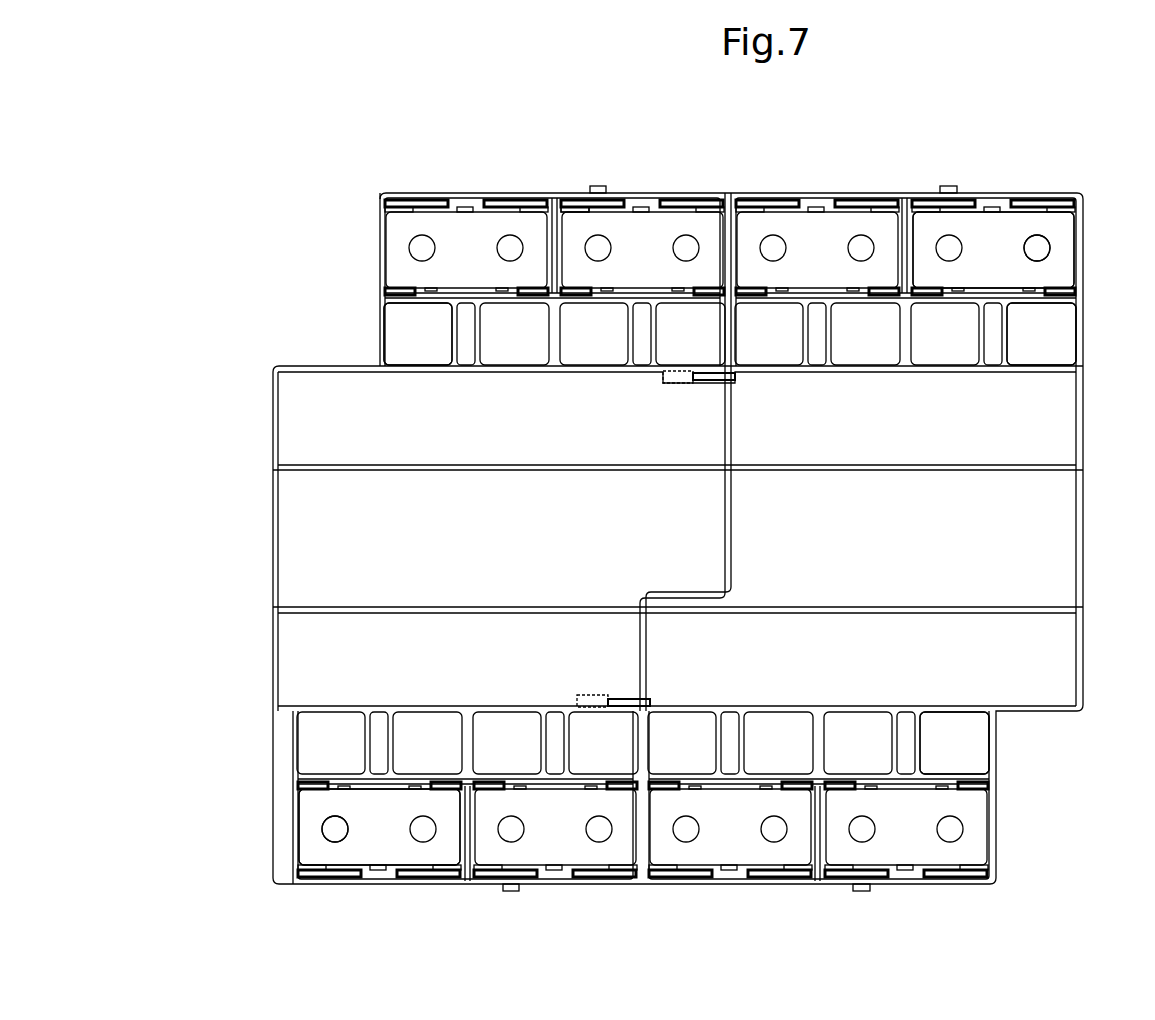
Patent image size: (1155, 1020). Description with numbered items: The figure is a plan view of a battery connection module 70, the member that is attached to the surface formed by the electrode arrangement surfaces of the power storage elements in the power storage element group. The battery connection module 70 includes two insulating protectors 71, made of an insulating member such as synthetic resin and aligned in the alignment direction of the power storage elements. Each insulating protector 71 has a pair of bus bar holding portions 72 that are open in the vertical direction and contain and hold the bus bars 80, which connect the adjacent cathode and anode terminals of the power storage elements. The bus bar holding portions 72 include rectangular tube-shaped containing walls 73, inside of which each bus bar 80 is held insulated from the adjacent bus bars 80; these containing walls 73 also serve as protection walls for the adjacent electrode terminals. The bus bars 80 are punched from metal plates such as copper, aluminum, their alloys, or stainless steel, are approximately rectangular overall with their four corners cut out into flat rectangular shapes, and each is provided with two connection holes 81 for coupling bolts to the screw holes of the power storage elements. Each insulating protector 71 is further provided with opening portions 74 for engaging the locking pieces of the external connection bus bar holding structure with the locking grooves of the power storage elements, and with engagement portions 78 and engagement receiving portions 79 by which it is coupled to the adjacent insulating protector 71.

The battery connection module 70 is at (716, 933).
The insulating protector 71 is at (273, 546).
The bus bar holding portion 72 is at (587, 213).
The containing wall 73 is at (552, 214).
The opening portion 74 is at (390, 322).
The engagement portion 78 is at (705, 380).
The engagement receiving portion 79 is at (683, 386).
The bus bar 80 is at (1057, 232).
The connection hole 81 is at (1046, 252).